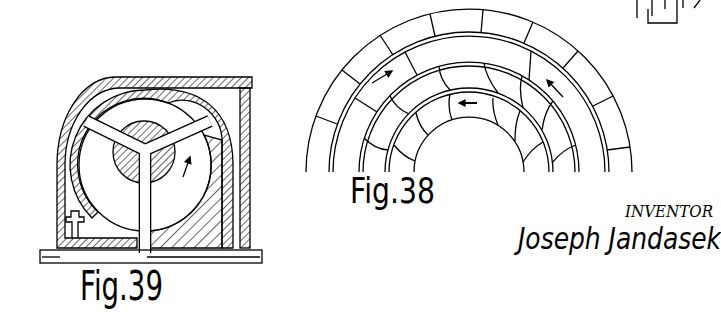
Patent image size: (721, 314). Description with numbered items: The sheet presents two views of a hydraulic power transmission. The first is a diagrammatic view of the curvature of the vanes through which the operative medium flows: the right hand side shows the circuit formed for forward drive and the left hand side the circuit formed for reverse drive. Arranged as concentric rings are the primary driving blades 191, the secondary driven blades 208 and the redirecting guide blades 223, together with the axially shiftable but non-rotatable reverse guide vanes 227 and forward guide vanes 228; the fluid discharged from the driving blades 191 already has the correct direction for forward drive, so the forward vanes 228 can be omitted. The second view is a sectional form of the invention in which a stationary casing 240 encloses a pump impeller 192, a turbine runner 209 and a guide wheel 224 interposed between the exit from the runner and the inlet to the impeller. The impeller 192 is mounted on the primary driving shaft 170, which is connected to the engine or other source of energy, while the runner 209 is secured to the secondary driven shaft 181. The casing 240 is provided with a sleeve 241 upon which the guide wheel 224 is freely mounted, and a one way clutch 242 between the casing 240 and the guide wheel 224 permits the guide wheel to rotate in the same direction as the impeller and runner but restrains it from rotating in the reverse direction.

In FIG. 38, the redirecting guide blades and wheel 223 is at (356, 62).
In FIG. 38, the secondary driven blades and wheel 208 is at (459, 76).
In FIG. 38, the reverse guide vanes 227 is at (469, 117).
In FIG. 38, the primary driving blades 191 is at (500, 115).
In FIG. 38, the forward guide vanes 228 is at (547, 117).
In FIG. 39, the stationary casing 240 is at (58, 158).
In FIG. 39, the turbine runner 209 is at (144, 141).
In FIG. 39, the stationary guide wheel 224 is at (147, 187).
In FIG. 39, the pump impeller 192 is at (176, 179).
In FIG. 39, the sleeve 241 is at (98, 218).
In FIG. 39, the one way clutch 242 is at (68, 232).
In FIG. 39, the primary driving shaft 170 is at (60, 259).
In FIG. 39, the secondary driven shaft 181 is at (268, 267).